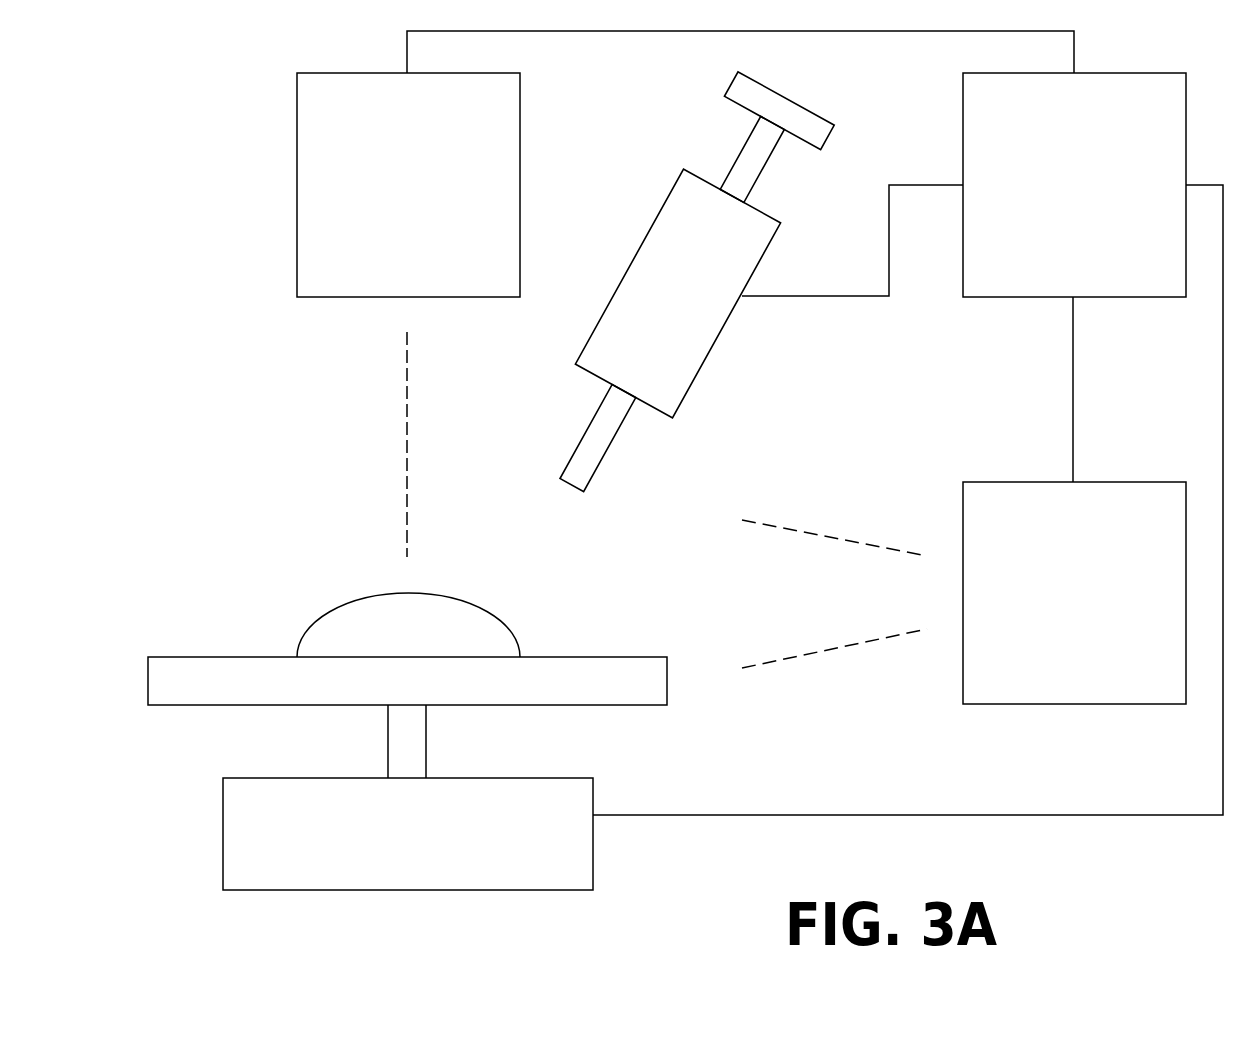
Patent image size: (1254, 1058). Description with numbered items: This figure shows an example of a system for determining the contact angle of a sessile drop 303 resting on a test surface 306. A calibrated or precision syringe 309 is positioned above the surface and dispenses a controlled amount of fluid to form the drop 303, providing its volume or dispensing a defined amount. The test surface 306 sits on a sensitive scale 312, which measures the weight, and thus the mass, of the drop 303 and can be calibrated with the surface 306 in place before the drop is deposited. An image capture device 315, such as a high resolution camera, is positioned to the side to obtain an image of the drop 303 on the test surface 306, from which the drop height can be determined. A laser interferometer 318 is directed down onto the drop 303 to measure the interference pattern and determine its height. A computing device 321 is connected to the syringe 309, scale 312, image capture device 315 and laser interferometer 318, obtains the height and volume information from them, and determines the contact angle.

The sessile drop 303 is at (386, 646).
The test surface 306 is at (386, 690).
The calibrated syringe 309 is at (654, 308).
The scale 312 is at (386, 848).
The image capture device 315 is at (1052, 606).
The laser interferometer 318 is at (387, 198).
The computing device 321 is at (1052, 198).